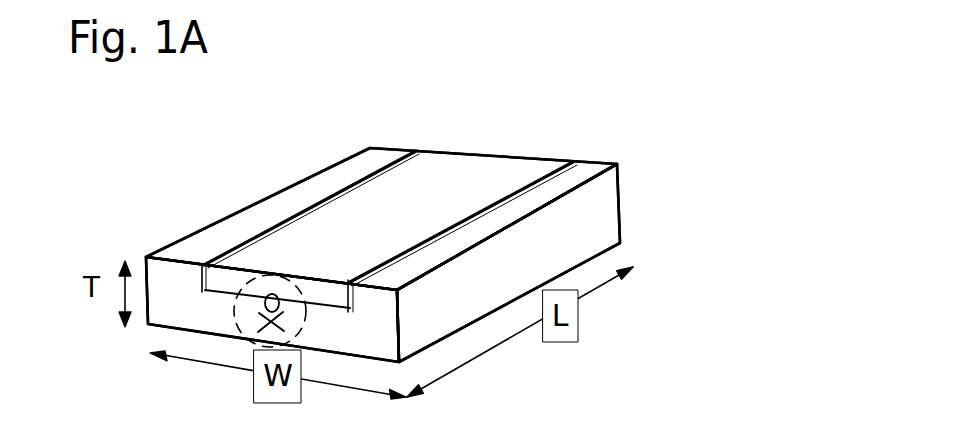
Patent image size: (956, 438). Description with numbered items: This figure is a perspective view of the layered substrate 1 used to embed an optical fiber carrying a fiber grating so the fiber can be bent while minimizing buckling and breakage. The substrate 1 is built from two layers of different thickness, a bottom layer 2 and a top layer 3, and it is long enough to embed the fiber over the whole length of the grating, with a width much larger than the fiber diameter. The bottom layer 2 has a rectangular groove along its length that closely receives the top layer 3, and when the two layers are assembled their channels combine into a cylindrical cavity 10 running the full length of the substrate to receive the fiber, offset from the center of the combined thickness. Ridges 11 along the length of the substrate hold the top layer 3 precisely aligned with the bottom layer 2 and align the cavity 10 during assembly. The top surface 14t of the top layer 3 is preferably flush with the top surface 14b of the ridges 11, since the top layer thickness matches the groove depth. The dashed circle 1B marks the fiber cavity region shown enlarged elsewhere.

The substrate 1 is at (603, 83).
The bottom layer 2 is at (588, 218).
The top layer 3 is at (497, 183).
The ridges 11 is at (173, 272).
The top surface of the ridges of the bottom layer 14b is at (305, 200).
The top surface of the top layer 14t is at (413, 183).
The detail region of FIG. 1B is at (240, 351).
The cylindrical cavity 10 is at (782, 433).